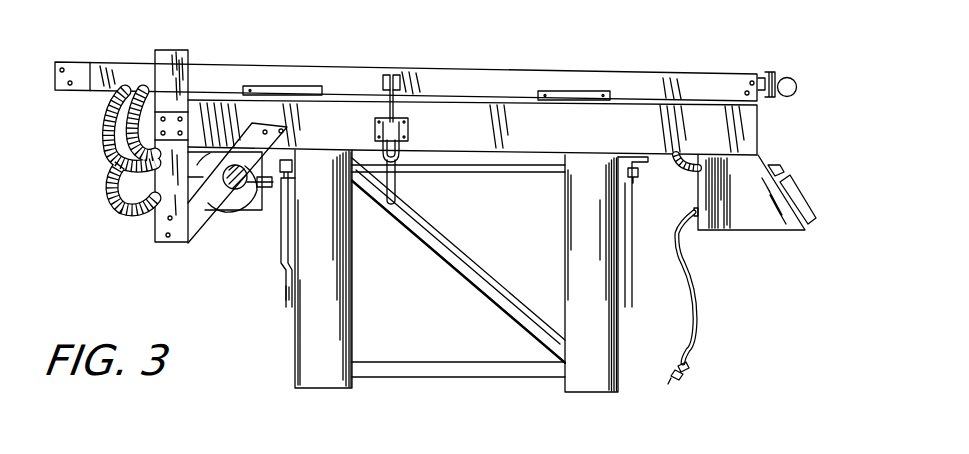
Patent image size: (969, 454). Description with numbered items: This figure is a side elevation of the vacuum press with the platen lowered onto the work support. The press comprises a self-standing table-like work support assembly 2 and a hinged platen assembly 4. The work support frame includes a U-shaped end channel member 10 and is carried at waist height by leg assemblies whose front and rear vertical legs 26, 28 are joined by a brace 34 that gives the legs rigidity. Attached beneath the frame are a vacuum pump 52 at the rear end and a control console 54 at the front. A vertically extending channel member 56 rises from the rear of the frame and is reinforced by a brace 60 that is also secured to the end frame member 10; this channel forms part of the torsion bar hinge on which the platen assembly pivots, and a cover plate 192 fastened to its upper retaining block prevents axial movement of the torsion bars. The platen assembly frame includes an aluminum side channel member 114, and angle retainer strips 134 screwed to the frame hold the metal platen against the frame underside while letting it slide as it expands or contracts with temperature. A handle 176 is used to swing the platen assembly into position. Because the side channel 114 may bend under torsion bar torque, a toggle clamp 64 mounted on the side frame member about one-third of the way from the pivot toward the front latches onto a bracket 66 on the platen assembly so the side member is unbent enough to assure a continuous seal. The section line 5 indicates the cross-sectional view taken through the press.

The work support assembly 2 is at (259, 288).
The platen assembly 4 is at (346, 62).
The section line 5- 5 is at (633, 35).
The channel member 10 is at (546, 128).
The front vertical leg 26 is at (597, 375).
The rear vertical leg 28 is at (312, 340).
The brace 34 is at (479, 273).
The vacuum pump 52 is at (237, 200).
The control console 54 is at (762, 218).
The channel member 56 is at (152, 227).
The brace 60 is at (200, 195).
The toggle clamp 64 is at (403, 155).
The bracket 66 is at (400, 78).
The channel member 114 is at (492, 80).
The angle retainer strip 134 is at (278, 90).
The handle 176 is at (798, 85).
The cover plate 192 is at (165, 60).